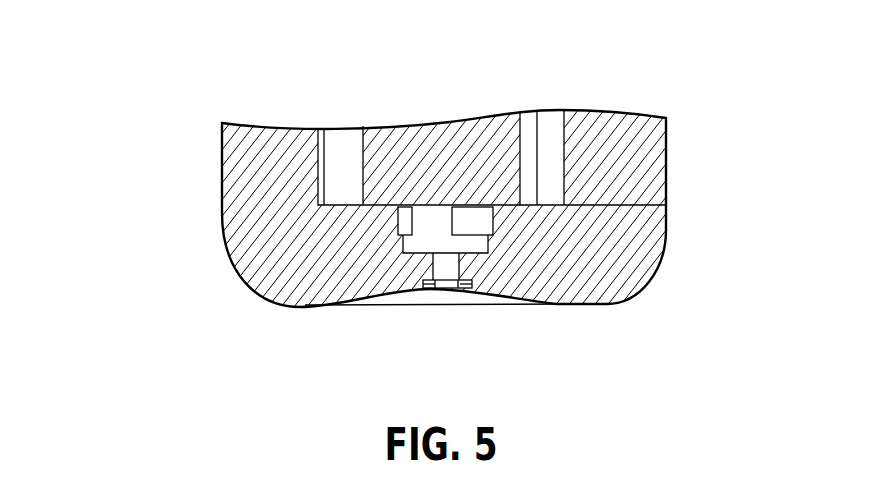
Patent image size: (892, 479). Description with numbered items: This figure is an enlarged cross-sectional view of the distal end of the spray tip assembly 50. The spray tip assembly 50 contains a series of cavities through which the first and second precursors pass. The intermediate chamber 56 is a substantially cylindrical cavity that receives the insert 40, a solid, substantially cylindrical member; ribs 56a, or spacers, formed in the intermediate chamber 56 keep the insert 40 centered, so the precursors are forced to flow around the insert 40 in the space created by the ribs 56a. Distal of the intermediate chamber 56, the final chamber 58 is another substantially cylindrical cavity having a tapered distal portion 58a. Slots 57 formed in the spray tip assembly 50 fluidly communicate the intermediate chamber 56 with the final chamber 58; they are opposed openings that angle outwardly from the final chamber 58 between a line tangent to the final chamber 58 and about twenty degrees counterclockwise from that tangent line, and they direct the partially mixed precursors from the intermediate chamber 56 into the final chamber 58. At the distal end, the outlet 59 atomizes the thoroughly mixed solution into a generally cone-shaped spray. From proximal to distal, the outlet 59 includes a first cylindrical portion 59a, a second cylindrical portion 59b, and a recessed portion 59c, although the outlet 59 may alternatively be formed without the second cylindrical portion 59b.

The spray tip assembly 50 is at (188, 132).
The insert 40 is at (440, 147).
The intermediate chamber 56 is at (563, 140).
The ribs 56a is at (337, 147).
The slots 57 is at (407, 222).
The final chamber 58 is at (488, 242).
The tapered distal portion 58a is at (433, 263).
The outlet 59 is at (433, 333).
The first cylindrical portion 59a is at (443, 289).
The second cylindrical portion 59b is at (466, 288).
The recessed portion 59c is at (530, 295).